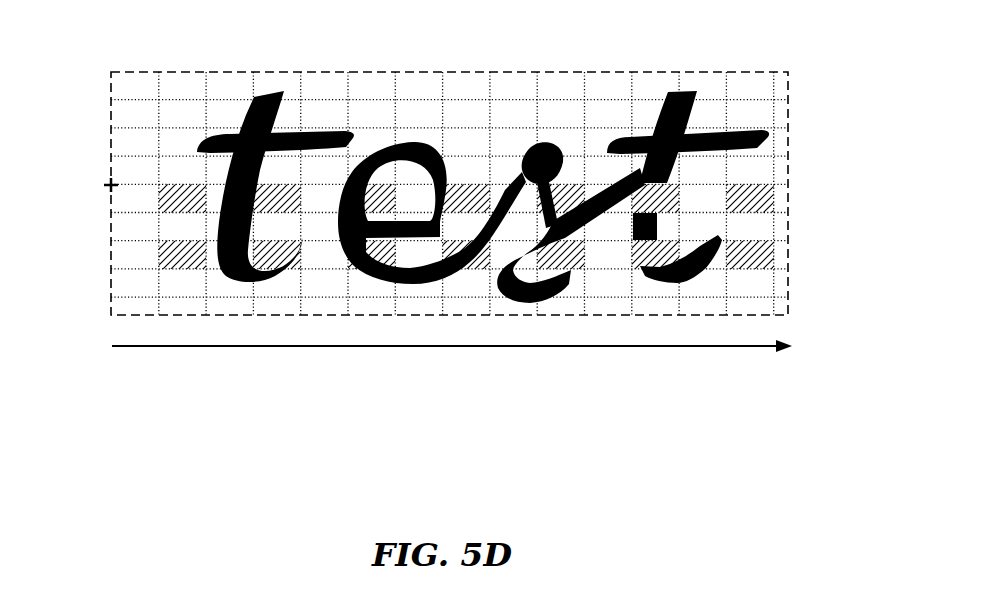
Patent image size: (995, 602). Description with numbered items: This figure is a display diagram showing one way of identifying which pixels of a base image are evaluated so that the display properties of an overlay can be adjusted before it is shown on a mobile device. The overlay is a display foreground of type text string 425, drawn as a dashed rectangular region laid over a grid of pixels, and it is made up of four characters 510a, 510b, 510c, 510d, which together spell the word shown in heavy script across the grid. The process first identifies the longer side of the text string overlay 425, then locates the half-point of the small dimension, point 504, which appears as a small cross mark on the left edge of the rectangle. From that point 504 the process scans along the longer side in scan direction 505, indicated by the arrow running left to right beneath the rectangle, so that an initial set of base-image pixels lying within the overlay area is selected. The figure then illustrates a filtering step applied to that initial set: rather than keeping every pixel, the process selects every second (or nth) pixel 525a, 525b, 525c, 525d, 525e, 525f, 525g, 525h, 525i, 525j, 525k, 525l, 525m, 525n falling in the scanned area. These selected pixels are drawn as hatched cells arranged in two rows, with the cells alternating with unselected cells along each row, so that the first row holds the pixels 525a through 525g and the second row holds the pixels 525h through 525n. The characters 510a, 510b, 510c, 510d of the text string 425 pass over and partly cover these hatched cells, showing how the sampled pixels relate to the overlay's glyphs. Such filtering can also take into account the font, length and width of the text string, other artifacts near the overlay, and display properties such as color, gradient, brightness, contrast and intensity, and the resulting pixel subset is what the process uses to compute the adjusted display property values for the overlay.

The text string overlay 425 is at (789, 91).
The half-point of the small dimension 504 is at (110, 185).
The scan direction 505 is at (507, 342).
The character of text string 510a is at (262, 88).
The character of text string 510b is at (398, 134).
The character of text string 510c is at (541, 139).
The character of text string 510d is at (673, 93).
The selected pixel 525a is at (182, 192).
The selected pixel 525b is at (276, 192).
The selected pixel 525c is at (358, 192).
The selected pixel 525d is at (466, 192).
The selected pixel 525e is at (565, 192).
The selected pixel 525f is at (666, 192).
The selected pixel 525g is at (749, 192).
The selected pixel 525h is at (182, 266).
The selected pixel 525i is at (280, 266).
The selected pixel 525j is at (364, 266).
The selected pixel 525k is at (466, 266).
The selected pixel 525l is at (569, 266).
The selected pixel 525m is at (646, 266).
The selected pixel 525n is at (749, 266).